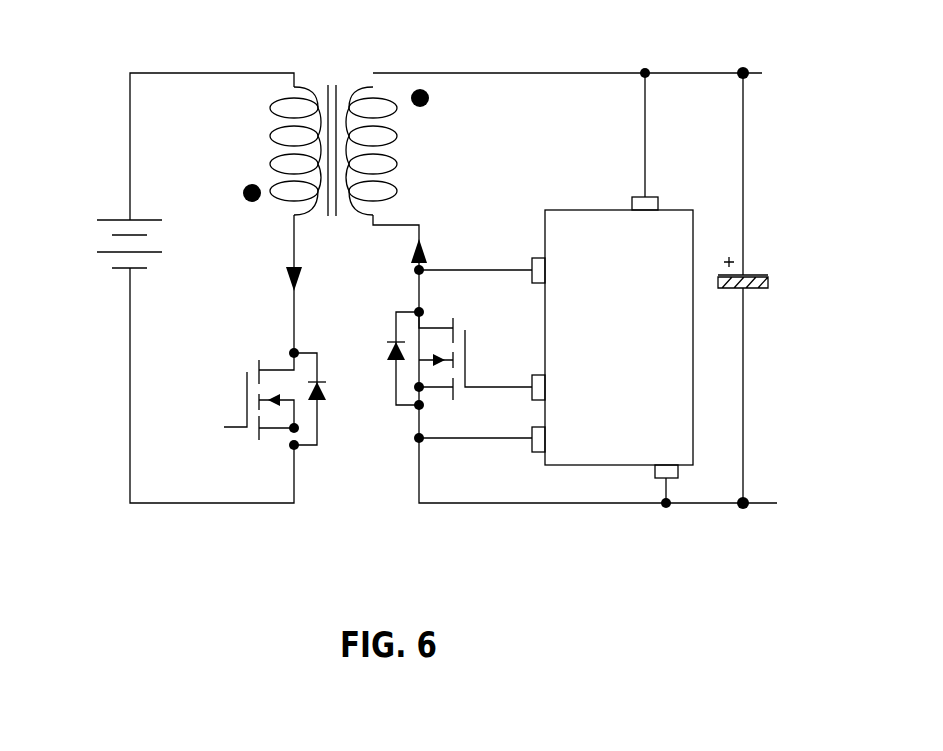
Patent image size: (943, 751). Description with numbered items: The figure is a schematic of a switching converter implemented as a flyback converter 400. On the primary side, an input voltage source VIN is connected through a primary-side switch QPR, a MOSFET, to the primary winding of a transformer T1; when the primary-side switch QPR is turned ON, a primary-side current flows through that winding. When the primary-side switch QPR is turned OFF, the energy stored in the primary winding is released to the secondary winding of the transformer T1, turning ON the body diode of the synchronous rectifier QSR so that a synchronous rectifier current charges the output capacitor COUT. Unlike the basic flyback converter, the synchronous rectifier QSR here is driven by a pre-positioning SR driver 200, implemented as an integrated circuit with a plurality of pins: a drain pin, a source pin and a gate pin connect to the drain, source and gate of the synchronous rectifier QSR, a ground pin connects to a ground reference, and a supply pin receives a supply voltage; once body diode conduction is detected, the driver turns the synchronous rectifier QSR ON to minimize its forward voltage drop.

The flyback converter 400 is at (87, 104).
The pre-positioning SR driver 200 is at (612, 350).
The transformer T1 is at (336, 126).
The primary-side switch QPR is at (258, 393).
The synchronous rectifier QSR is at (459, 354).
The input voltage source VIN is at (98, 244).
The output capacitor COUT is at (766, 288).